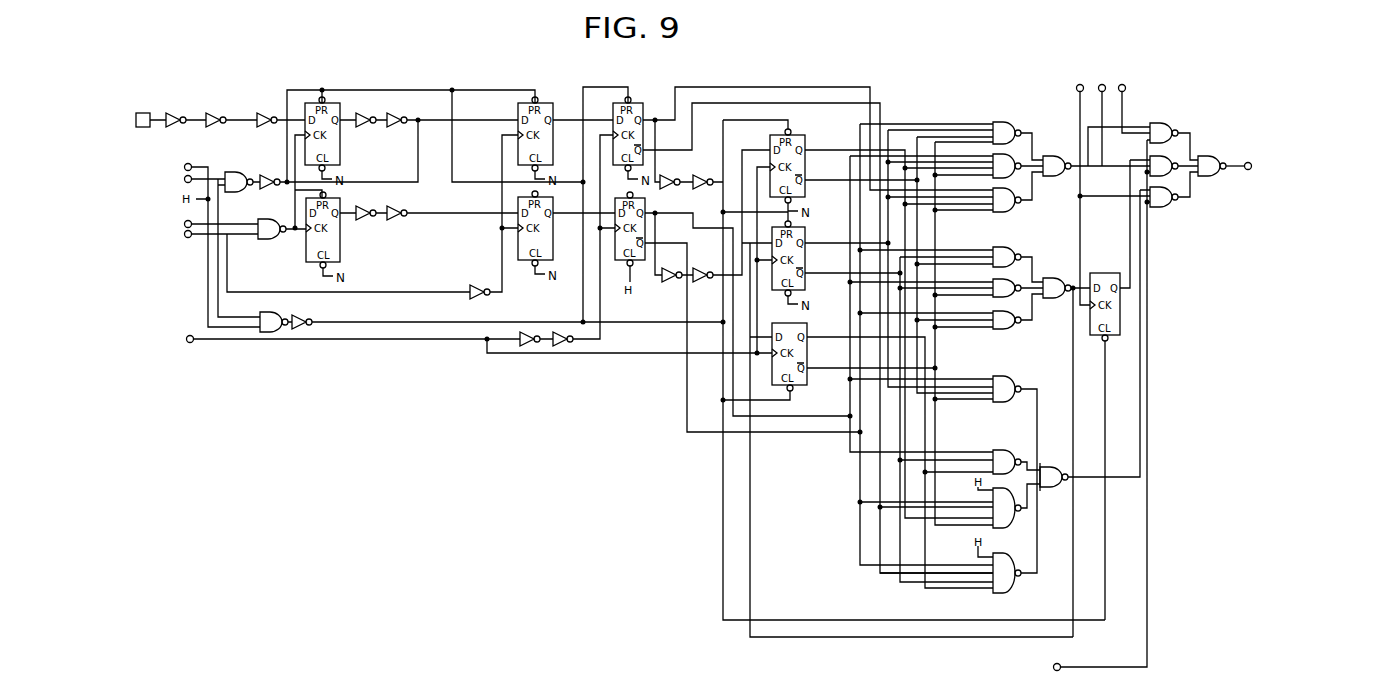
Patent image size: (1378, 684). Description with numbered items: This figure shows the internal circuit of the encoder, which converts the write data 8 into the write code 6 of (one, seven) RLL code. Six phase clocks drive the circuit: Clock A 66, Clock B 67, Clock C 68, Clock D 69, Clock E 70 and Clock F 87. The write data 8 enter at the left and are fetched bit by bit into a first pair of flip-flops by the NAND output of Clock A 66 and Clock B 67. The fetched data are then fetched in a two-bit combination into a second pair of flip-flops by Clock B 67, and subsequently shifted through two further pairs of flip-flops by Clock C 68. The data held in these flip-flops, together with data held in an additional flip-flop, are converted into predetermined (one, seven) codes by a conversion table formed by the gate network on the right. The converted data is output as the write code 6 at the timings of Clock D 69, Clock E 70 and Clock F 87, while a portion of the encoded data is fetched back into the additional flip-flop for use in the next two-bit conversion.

The write data 8 is at (89, 129).
The Clock A 66 is at (110, 226).
The Clock B 67 is at (110, 246).
The Clock C 68 is at (113, 348).
The Clock D 69 is at (1077, 89).
The Clock E 70 is at (1102, 84).
The Clock F 87 is at (1125, 89).
The write code 6 is at (1288, 181).